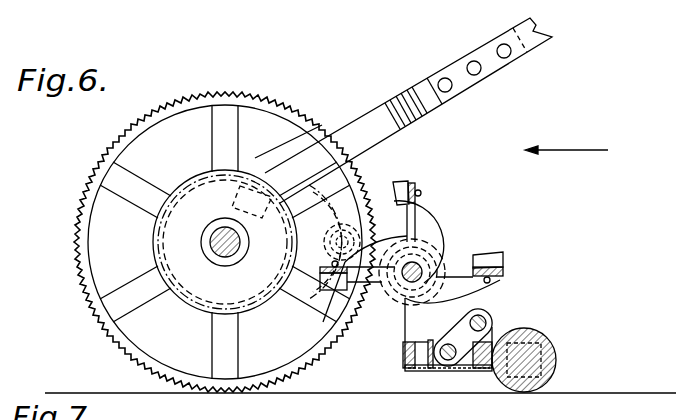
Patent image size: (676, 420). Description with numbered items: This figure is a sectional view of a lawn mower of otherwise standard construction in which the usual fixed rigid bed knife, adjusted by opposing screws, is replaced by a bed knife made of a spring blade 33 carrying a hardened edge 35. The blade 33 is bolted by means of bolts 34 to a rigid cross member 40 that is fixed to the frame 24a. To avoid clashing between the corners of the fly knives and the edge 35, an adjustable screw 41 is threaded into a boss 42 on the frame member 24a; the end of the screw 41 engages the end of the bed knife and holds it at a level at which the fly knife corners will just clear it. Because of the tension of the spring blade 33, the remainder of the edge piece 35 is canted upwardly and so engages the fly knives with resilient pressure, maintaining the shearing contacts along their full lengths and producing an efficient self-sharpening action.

The frame 24a is at (458, 305).
The blade 33 is at (456, 372).
The bolts 34 is at (478, 372).
The hardened edge 35 is at (434, 370).
The rigid cross member 40 is at (490, 340).
The adjustable screw 41 is at (430, 340).
The boss 42 is at (455, 345).